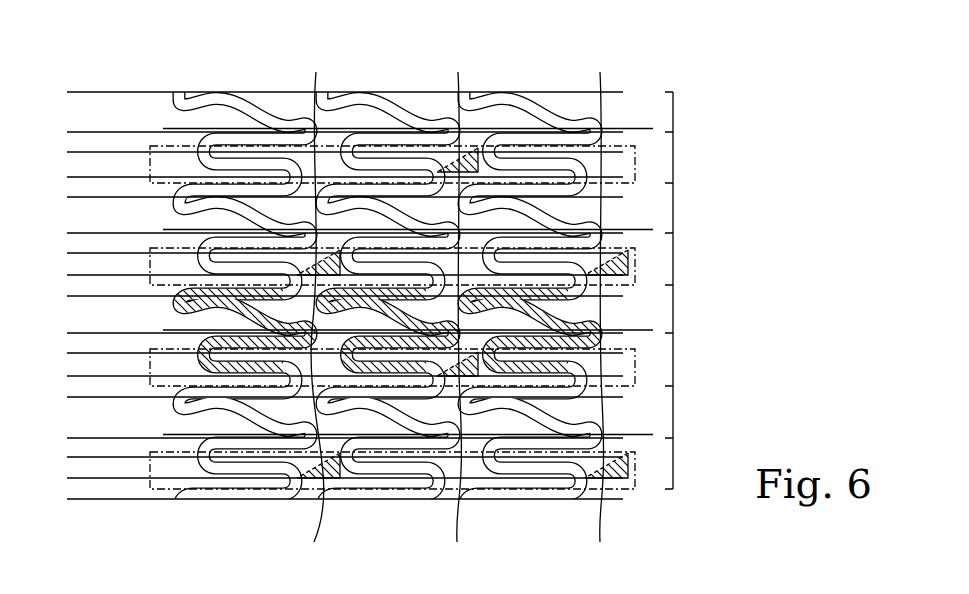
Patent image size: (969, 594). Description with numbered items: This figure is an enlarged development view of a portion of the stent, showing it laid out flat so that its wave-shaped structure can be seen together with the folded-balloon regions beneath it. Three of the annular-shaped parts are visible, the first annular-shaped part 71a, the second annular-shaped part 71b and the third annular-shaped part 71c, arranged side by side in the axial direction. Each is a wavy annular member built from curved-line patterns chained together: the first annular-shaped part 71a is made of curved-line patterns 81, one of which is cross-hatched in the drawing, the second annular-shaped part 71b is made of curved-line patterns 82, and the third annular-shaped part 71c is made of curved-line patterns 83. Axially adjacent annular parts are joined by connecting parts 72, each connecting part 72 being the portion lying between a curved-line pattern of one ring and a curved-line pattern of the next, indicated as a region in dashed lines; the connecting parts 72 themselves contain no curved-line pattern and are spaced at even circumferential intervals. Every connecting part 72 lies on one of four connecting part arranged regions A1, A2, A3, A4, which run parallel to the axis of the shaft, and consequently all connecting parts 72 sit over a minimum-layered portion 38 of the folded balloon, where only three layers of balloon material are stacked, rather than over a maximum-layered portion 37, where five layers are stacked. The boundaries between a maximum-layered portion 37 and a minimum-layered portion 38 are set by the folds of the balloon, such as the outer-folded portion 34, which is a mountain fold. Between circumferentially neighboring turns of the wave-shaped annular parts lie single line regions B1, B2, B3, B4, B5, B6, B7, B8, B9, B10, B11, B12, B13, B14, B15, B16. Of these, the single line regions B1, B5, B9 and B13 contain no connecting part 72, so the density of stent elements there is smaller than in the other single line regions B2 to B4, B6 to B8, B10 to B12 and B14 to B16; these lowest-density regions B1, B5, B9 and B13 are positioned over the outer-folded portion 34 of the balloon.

The first annular-shaped part 71a is at (232, 90).
The second annular-shaped part 71b is at (368, 90).
The third annular-shaped part 71c is at (510, 88).
The connecting part 72 is at (459, 307).
The outer-folded portion 34 is at (646, 128).
The maximum-layered portion 37 is at (679, 413).
The minimum-layered portion 38 is at (679, 463).
The curved-line pattern 81 is at (250, 372).
The curved-line pattern 82 is at (385, 372).
The curved-line pattern 83 is at (528, 372).
The connecting part arranged region A1 is at (152, 146).
The connecting part arranged region A2 is at (152, 248).
The connecting part arranged region A3 is at (152, 349).
The connecting part arranged region A4 is at (152, 452).
The single line region B1 is at (73, 93).
The single line region B2 is at (73, 133).
The single line region B3 is at (73, 153).
The single line region B4 is at (73, 178).
The single line region B5 is at (73, 198).
The single line region B6 is at (73, 234).
The single line region B7 is at (73, 254).
The single line region B8 is at (73, 276).
The single line region B9 is at (73, 297).
The single line region B10 is at (73, 334).
The single line region B11 is at (73, 354).
The single line region B12 is at (73, 377).
The single line region B13 is at (73, 398).
The single line region B14 is at (73, 439).
The single line region B15 is at (73, 458).
The single line region B16 is at (73, 479).